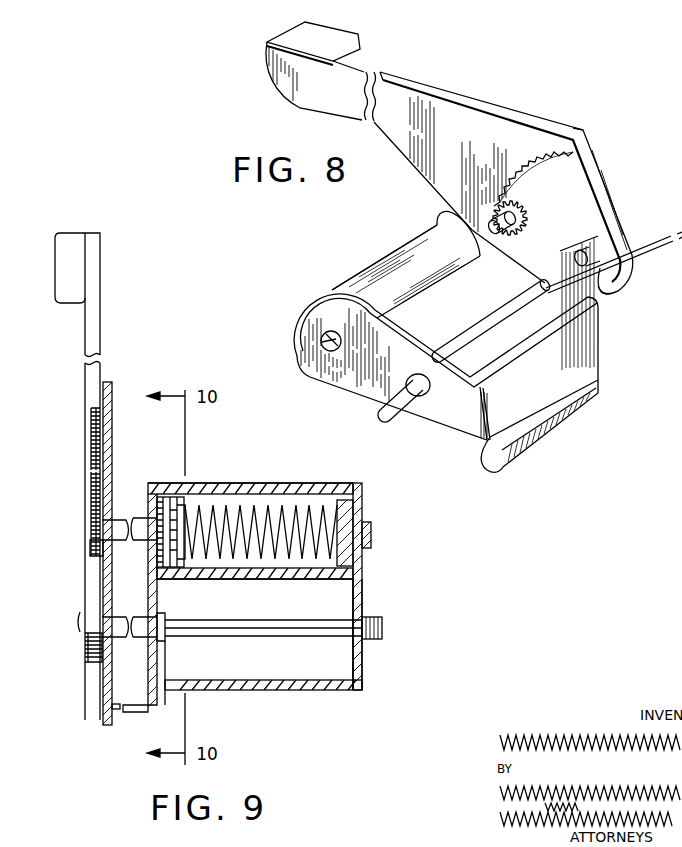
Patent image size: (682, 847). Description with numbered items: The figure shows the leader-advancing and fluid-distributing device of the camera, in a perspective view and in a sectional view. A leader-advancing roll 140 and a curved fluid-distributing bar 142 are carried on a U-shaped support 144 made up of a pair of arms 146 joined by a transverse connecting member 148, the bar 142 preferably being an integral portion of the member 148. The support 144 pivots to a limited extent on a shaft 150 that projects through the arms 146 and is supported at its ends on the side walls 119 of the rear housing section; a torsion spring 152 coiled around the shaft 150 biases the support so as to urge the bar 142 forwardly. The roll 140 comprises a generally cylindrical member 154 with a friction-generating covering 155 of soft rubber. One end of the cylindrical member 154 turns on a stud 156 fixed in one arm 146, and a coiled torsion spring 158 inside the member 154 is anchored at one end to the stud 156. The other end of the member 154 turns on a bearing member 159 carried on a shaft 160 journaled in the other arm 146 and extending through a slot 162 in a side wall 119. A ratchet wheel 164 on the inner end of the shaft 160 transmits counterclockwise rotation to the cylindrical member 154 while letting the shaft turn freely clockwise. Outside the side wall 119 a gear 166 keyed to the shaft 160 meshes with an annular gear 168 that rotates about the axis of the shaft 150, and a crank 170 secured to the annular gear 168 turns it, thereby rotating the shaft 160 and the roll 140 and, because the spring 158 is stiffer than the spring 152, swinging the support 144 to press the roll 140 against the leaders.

In FIG. 9, the side walls 119 is at (112, 437).
In FIG. 8, the leader-advancing roll 140 is at (325, 283).
In FIG. 9, the leader-advancing roll 140 is at (254, 474).
In FIG. 8, the fluid-distributing bar 142 is at (532, 442).
In FIG. 8, the U-shaped support 144 is at (427, 424).
In FIG. 9, the U-shaped support 144 is at (372, 592).
In FIG. 8, the arms 146 is at (360, 380).
In FIG. 9, the arms 146 is at (358, 670).
In FIG. 8, the transverse connecting member 148 is at (508, 396).
In FIG. 9, the transverse connecting member 148 is at (267, 690).
In FIG. 8, the shaft 150 is at (463, 350).
In FIG. 9, the shaft 150 is at (382, 630).
In FIG. 8, the torsion spring 152 is at (617, 285).
In FIG. 9, the torsion spring 152 is at (167, 702).
In FIG. 9, the cylindrical member 154 is at (292, 494).
In FIG. 8, the covering 155 is at (378, 265).
In FIG. 9, the covering 155 is at (330, 485).
In FIG. 8, the stud 156 is at (321, 345).
In FIG. 9, the stud 156 is at (371, 530).
In FIG. 9, the coiled torsion spring 158 is at (225, 505).
In FIG. 9, the bearing member 159 is at (207, 478).
In FIG. 8, the shaft 160 is at (500, 213).
In FIG. 9, the shaft 160 is at (143, 518).
In FIG. 9, the slot 162 is at (105, 552).
In FIG. 9, the ratchet wheel 164 is at (190, 545).
In FIG. 8, the gear 166 is at (533, 203).
In FIG. 9, the gear 166 is at (93, 532).
In FIG. 8, the annular gear 168 is at (540, 150).
In FIG. 9, the annular gear 168 is at (90, 431).
In FIG. 8, the crank 170 is at (428, 92).
In FIG. 9, the crank 170 is at (100, 290).